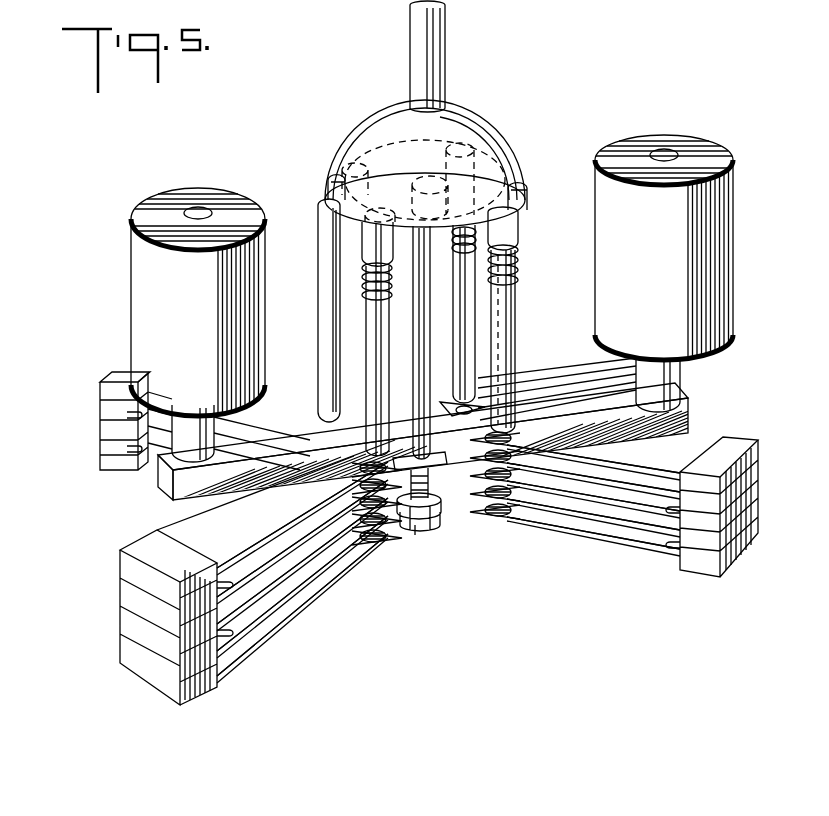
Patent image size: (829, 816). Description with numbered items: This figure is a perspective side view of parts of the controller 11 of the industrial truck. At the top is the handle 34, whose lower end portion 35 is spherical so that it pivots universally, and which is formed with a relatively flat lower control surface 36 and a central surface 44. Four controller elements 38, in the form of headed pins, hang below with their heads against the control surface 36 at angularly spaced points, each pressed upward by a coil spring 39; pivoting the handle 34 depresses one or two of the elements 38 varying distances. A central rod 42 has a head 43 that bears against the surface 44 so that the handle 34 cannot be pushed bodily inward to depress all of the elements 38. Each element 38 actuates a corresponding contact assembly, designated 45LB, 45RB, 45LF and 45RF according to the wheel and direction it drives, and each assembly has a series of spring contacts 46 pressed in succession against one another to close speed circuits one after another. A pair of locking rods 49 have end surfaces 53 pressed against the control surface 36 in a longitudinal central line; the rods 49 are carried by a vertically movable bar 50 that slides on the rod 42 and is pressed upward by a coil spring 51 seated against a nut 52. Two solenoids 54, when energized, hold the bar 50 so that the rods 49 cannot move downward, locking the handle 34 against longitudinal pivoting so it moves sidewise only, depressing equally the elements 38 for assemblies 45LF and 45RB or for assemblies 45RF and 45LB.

The controller 11 is at (600, 104).
The handle 34 is at (410, 49).
The lower end portion of handle 35 is at (465, 104).
The control surface 36 is at (400, 228).
The controller elements 38 is at (485, 126).
The coil spring 39 is at (372, 266).
The rod 42 is at (415, 326).
The head 43 is at (422, 172).
The surface 44 is at (398, 184).
The contact assembly 45LB is at (92, 411).
The contact assembly 45RB is at (300, 630).
The contact assembly 45LF is at (638, 560).
The contact assembly 45RF is at (624, 377).
The spring contacts 46 is at (330, 600).
The locking rods 49 is at (322, 300).
The bar 50 is at (690, 418).
The coil spring 51 is at (430, 496).
The nut 52 is at (421, 532).
The end surfaces 53 is at (520, 181).
The solenoids 54 is at (130, 304).